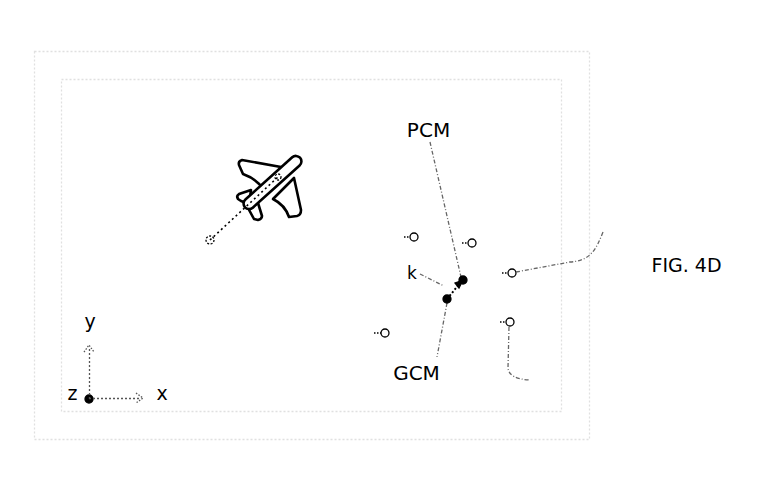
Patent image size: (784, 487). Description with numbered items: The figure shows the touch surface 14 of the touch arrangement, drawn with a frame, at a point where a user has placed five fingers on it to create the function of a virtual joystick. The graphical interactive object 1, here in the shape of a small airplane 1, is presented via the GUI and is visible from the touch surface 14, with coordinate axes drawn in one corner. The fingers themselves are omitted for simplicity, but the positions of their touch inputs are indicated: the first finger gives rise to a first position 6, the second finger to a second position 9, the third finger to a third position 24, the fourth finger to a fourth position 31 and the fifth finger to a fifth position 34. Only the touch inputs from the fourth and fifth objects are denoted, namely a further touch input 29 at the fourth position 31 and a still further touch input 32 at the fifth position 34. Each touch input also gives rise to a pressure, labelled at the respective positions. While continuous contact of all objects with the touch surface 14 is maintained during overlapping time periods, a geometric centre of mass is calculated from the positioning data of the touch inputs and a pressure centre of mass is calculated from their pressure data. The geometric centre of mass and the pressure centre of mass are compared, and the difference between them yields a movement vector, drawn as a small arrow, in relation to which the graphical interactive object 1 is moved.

The touch surface 14 is at (118, 135).
The graphical interactive object 1 is at (262, 178).
The first position 6 is at (411, 233).
The second position 9 is at (374, 334).
The third position 24 is at (477, 239).
The fourth position 31 is at (516, 270).
The further touch input 29 is at (574, 247).
The fifth position 34 is at (514, 320).
The still further touch input 32 is at (529, 369).